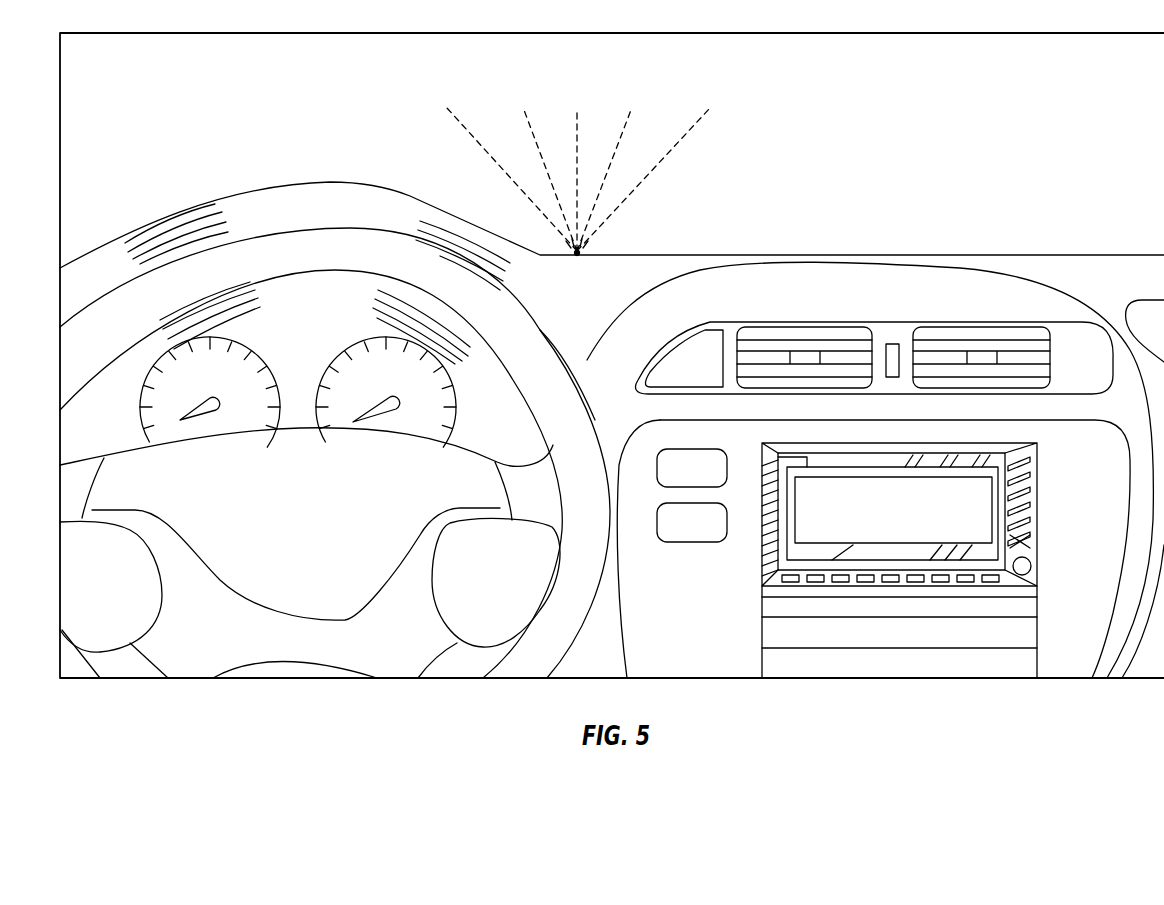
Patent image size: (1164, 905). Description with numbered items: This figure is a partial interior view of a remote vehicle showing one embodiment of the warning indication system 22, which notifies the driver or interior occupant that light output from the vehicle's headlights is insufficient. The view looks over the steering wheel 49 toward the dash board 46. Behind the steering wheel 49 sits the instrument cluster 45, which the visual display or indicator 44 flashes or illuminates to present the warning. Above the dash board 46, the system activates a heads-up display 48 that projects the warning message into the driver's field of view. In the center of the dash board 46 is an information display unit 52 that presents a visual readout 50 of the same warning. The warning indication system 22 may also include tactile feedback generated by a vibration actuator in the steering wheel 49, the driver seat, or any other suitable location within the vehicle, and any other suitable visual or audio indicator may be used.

The warning indication system 22 is at (796, 176).
The visual display or indicator 44 is at (298, 308).
The instrument cluster 45 is at (509, 436).
The dash board 46 is at (620, 264).
The heads-up display 48 is at (720, 97).
The steering wheel 49 is at (313, 228).
The visual readout 50 is at (990, 494).
The information display unit 52 is at (1030, 533).